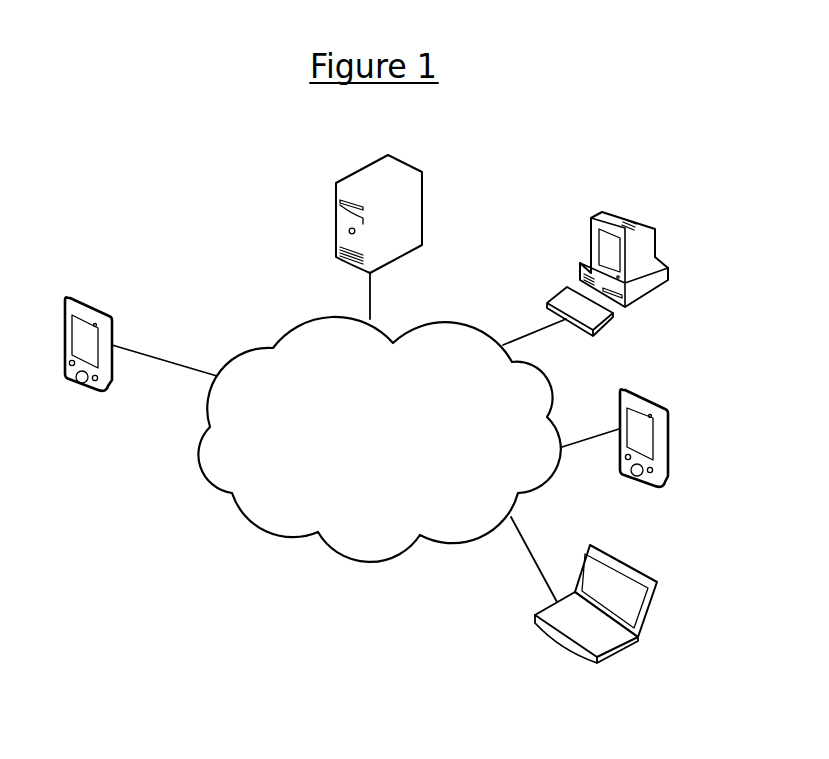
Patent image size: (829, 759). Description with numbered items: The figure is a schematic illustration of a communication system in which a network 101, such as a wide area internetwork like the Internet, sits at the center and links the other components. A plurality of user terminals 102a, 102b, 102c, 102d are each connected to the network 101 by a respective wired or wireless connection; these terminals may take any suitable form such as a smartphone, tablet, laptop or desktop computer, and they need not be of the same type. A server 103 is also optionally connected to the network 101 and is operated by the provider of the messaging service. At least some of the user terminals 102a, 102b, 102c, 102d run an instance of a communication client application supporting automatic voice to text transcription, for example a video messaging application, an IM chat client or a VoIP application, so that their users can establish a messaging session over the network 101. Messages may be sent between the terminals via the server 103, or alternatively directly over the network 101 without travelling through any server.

The network 101 is at (370, 558).
The user terminal 102a is at (100, 393).
The user terminal 102b is at (630, 212).
The user terminal 102c is at (652, 398).
The user terminal 102d is at (623, 650).
The server 103 is at (337, 225).